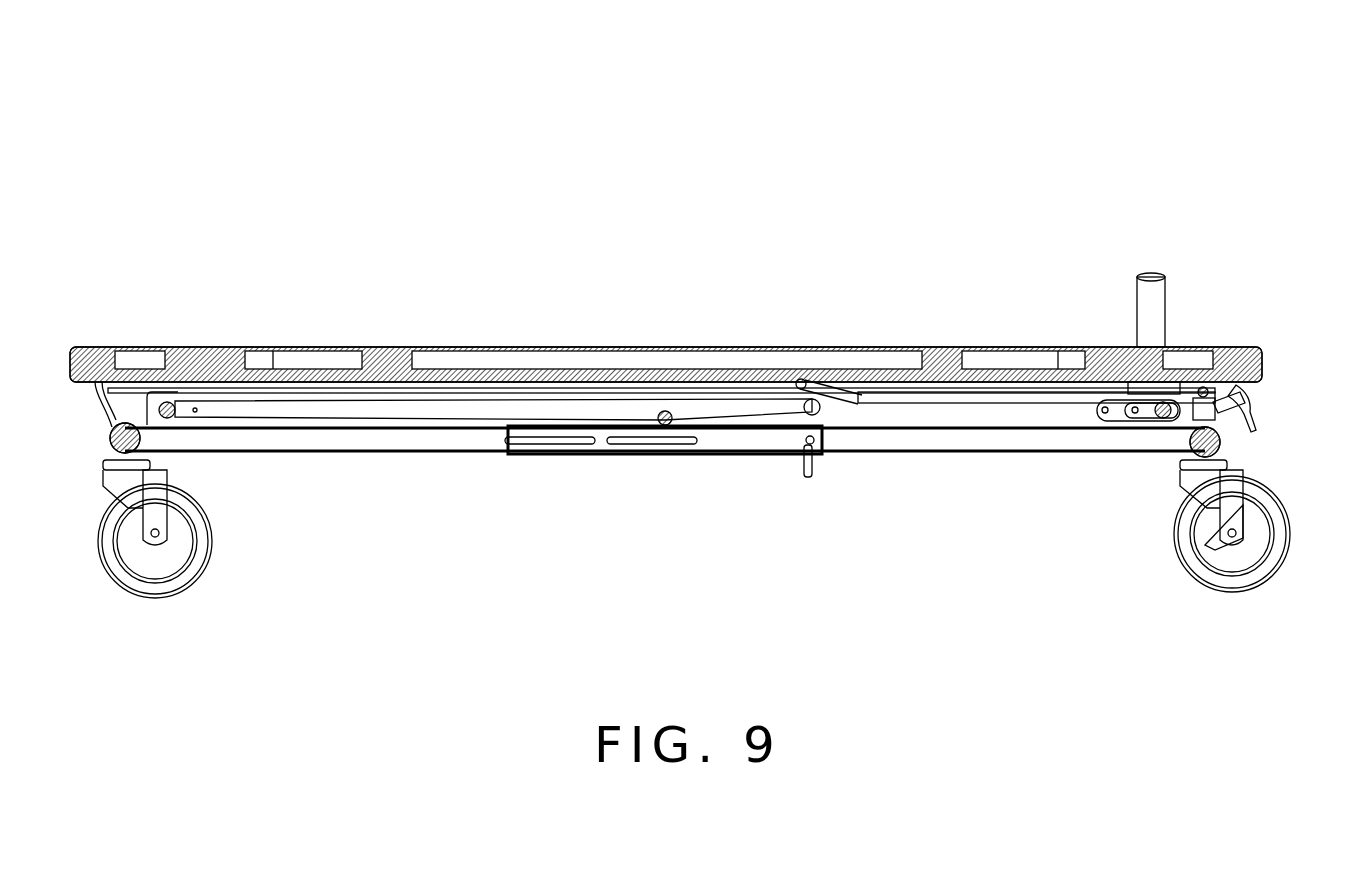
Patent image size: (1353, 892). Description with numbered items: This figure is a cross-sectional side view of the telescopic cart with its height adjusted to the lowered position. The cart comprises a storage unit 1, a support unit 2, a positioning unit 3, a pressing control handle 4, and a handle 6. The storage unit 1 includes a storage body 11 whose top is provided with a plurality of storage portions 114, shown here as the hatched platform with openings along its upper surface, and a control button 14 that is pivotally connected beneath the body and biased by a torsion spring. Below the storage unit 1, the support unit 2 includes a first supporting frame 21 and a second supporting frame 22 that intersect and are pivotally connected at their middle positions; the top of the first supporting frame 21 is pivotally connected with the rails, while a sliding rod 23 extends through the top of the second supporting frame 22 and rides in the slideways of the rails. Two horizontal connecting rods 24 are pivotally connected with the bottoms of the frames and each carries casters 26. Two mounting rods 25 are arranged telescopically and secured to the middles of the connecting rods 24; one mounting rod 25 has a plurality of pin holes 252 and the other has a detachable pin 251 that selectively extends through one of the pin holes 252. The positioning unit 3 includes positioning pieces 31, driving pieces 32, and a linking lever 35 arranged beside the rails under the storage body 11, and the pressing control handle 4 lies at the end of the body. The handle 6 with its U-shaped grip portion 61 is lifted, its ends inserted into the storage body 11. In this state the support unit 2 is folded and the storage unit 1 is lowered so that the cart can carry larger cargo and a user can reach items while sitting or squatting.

The storage unit 1 is at (1308, 222).
The support unit 2 is at (314, 607).
The positioning unit 3 is at (990, 253).
The pressing control handle 4 is at (1252, 412).
The handle 6 is at (1113, 195).
The storage body 11 is at (1250, 348).
The control button 14 is at (1246, 390).
The first supporting frame 21 is at (187, 413).
The second supporting frame 22 is at (457, 429).
The sliding rod 23 is at (1165, 425).
The connecting rod 24 is at (160, 473).
The mounting rod 25 is at (873, 456).
The caster 26 is at (183, 578).
The positioning piece 31 is at (1108, 392).
The driving piece 32 is at (1137, 348).
The linking lever 35 is at (1204, 348).
The grip portion 61 is at (1148, 280).
The storage portion 114 is at (785, 358).
The detachable pin 251 is at (806, 446).
The pin hole 252 is at (647, 445).